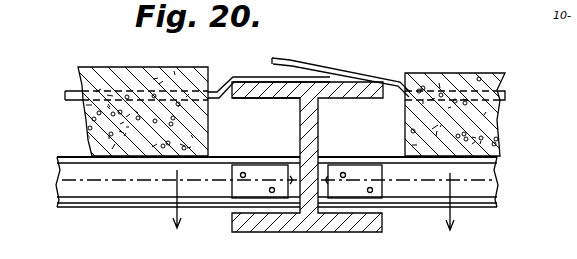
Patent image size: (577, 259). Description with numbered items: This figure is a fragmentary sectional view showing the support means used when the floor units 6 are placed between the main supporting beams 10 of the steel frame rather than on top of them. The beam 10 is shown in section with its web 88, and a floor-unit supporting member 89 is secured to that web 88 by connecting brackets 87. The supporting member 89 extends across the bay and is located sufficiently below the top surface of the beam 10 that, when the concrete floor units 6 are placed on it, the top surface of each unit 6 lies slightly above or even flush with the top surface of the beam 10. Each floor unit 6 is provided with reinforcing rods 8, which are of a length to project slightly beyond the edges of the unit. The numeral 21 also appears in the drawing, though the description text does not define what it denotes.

The floor unit 6 is at (110, 80).
The reinforcing rods 8 is at (247, 72).
The beam 10 is at (263, 101).
The direction of movement 21 is at (314, 210).
The connecting bracket 87 is at (250, 193).
The web 88 is at (300, 132).
The floor-unit supporting member 89 is at (137, 205).